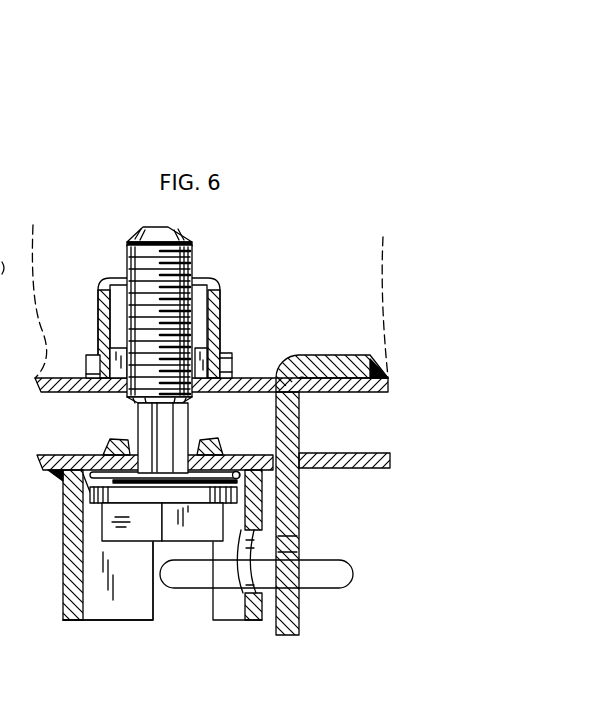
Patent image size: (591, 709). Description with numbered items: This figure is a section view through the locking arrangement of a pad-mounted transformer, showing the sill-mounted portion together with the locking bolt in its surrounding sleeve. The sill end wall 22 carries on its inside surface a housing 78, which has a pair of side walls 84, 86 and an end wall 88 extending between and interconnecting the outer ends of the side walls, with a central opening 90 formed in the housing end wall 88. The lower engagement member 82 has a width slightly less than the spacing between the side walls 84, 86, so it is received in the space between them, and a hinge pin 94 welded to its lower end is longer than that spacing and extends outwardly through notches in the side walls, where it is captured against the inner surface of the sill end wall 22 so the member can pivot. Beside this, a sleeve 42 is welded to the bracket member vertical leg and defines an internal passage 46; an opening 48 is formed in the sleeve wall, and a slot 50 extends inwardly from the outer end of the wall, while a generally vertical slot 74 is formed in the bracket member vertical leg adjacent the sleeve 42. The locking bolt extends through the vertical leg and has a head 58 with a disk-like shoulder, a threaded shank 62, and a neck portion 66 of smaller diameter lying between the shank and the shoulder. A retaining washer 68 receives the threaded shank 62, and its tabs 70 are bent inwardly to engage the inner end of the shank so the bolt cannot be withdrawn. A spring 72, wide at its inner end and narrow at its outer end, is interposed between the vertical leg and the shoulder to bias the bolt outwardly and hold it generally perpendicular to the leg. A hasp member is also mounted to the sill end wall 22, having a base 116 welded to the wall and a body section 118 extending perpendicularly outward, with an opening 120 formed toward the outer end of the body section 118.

The end wall 22 is at (345, 393).
The sleeve 42 is at (70, 626).
The internal passage 46 is at (63, 560).
The opening 48 is at (245, 593).
The slot 50 is at (155, 607).
The head 58 is at (132, 542).
The threaded shank 62 is at (198, 263).
The neck portion 66 is at (135, 422).
The retaining washer 68 is at (220, 447).
The tabs 70 is at (207, 437).
The spring 72 is at (63, 497).
The vertical slot 74 is at (313, 462).
The housing 78 is at (172, 302).
The lower engagement member 82 is at (210, 338).
The side wall 84 is at (97, 333).
The side wall 86 is at (220, 310).
The end wall 88 is at (114, 277).
The central opening 90 is at (115, 277).
The hinge pin 94 is at (230, 355).
The base 116 is at (338, 354).
The body section 118 is at (300, 503).
The opening 120 is at (290, 544).